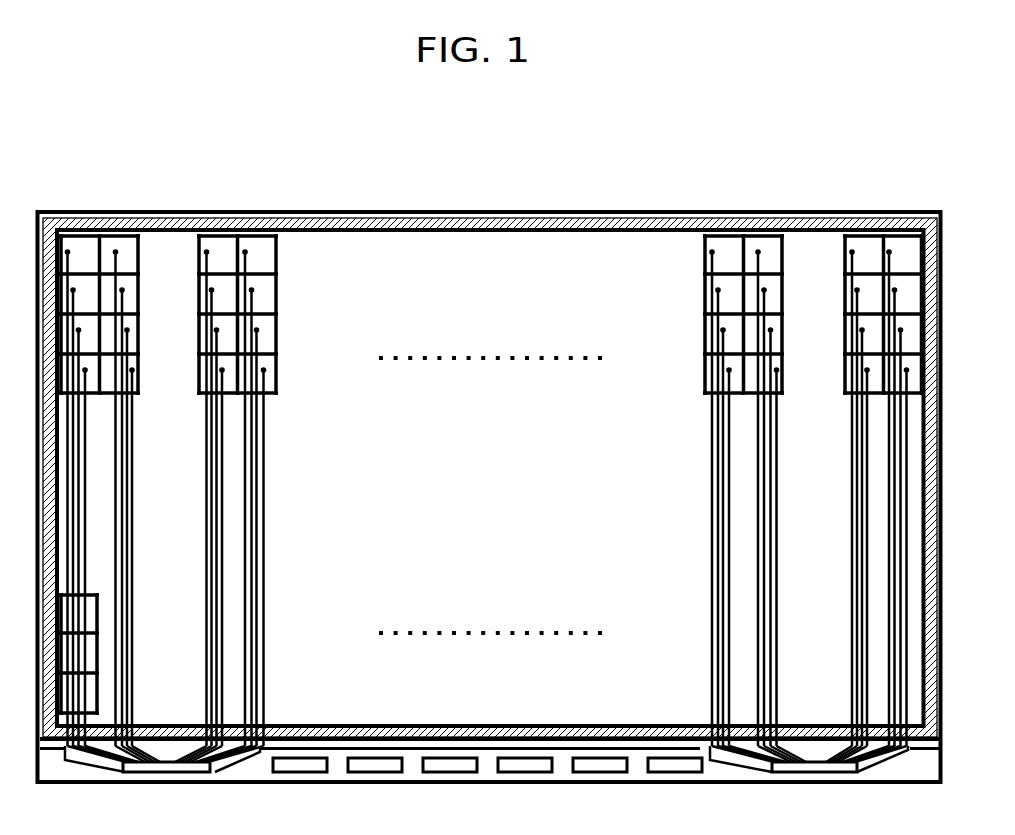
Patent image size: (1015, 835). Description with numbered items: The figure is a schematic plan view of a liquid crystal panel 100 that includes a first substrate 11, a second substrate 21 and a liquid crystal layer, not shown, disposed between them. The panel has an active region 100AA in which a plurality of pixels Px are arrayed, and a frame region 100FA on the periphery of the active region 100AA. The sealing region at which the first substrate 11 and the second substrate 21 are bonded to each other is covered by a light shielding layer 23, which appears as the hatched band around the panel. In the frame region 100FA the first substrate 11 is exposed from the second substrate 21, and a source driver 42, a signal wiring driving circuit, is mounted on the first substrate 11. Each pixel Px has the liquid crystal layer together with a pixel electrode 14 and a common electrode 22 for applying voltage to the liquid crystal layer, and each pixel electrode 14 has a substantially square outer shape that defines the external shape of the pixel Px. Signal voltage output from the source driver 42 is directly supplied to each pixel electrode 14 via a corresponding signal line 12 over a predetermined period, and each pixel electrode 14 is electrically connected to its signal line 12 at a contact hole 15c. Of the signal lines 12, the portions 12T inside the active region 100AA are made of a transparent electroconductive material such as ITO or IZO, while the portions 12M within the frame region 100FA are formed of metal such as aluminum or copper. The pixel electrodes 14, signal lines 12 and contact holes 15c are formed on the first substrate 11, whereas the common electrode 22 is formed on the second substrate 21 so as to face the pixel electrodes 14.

The liquid crystal panel 100 is at (524, 465).
The first substrate 11 is at (942, 762).
The second substrate 21 is at (942, 300).
The light shielding layer 23 is at (927, 530).
The active region 100AA is at (517, 478).
The common electrode 22 is at (493, 558).
The pixel electrode 14 is at (278, 262).
The pixel Px is at (491, 274).
The contact hole 15c is at (258, 330).
The signal line 12 is at (486, 496).
The transparent portion of signal line 12T is at (265, 520).
The metal portion of signal line 12M is at (223, 765).
The source driver 42 is at (162, 772).
The frame region 100FA is at (483, 770).